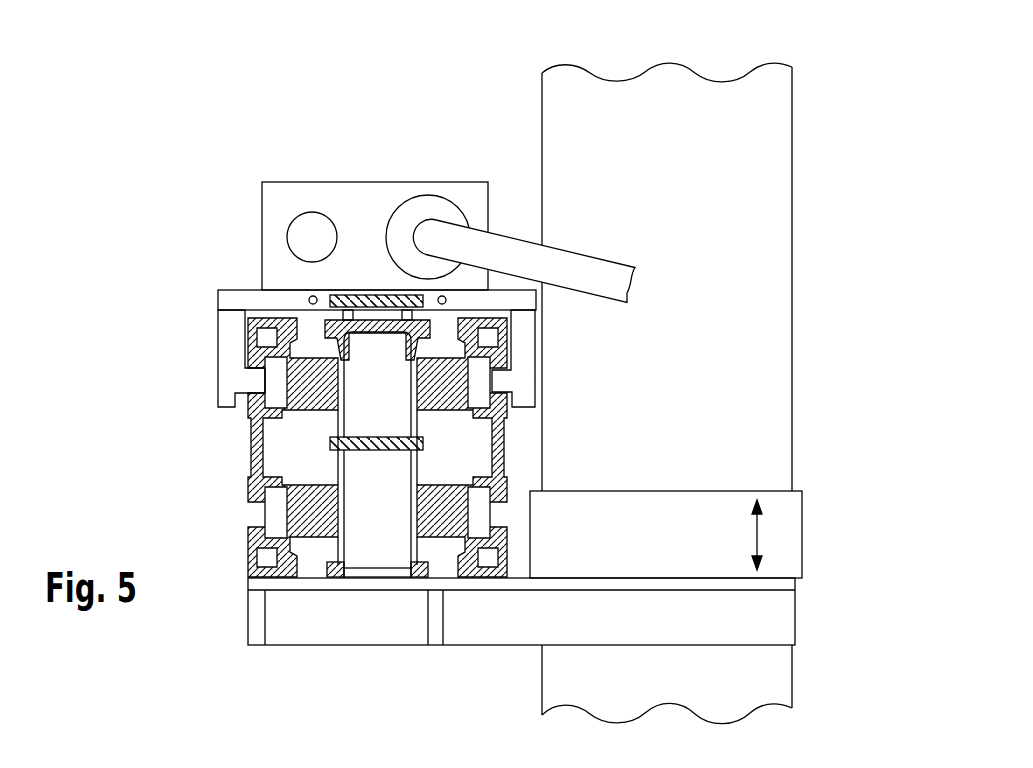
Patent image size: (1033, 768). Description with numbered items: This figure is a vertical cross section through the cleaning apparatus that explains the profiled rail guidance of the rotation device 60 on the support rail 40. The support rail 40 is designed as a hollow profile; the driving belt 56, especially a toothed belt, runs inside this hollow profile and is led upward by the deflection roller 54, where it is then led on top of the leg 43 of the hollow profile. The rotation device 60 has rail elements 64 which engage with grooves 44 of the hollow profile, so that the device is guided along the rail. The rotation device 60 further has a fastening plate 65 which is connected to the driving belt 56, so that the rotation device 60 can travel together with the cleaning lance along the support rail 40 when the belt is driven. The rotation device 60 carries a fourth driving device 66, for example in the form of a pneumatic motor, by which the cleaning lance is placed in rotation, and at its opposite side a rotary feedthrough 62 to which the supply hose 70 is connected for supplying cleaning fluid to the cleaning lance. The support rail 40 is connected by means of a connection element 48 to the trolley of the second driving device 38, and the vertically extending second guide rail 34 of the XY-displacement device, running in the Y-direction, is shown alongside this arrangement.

The second guide rail 34 is at (762, 263).
The second driving device 38 is at (783, 535).
The support rail 40 is at (257, 483).
The leg 43 is at (378, 327).
The grooves 44 is at (257, 392).
The connection element 48 is at (517, 583).
The deflection roller 54 is at (388, 407).
The driving belt 56 is at (355, 300).
The rotation device 60 is at (402, 177).
The rotary feedthrough 62 is at (430, 220).
The rail elements 64 is at (232, 338).
The fastening plate 65 is at (242, 298).
The fourth driving device 66 is at (310, 237).
The supply hose 70 is at (597, 277).